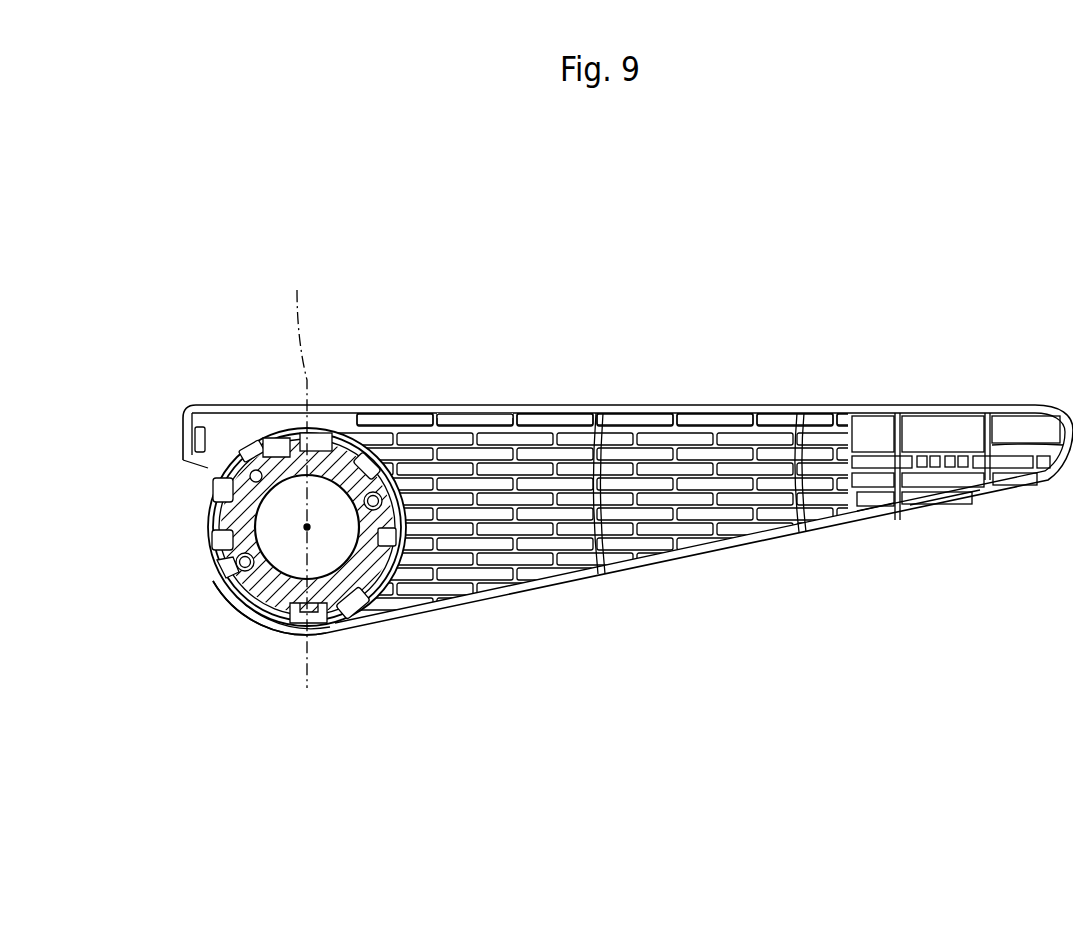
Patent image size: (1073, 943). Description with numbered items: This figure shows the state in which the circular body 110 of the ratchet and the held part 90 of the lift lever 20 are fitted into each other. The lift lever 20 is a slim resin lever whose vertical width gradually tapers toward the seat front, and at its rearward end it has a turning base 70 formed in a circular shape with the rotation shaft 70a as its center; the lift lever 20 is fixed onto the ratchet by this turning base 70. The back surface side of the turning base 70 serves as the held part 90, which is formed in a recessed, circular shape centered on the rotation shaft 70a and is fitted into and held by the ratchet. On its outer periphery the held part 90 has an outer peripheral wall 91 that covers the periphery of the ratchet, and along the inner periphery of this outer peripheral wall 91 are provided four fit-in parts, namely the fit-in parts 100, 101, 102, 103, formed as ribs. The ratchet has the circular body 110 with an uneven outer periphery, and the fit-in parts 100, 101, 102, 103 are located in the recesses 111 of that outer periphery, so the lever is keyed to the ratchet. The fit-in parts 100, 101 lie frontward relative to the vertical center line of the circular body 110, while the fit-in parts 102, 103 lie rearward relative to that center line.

The lift lever 20 is at (583, 405).
The turning base 70 is at (262, 633).
The rotation shaft 70a is at (310, 522).
The held part 90 is at (242, 438).
The outer peripheral wall 91 is at (415, 583).
The fit-in part 100 is at (322, 443).
The fit-in part 101 is at (323, 633).
The fit-in part 102 is at (220, 565).
The fit-in part 103 is at (217, 522).
The circular body 110 is at (398, 588).
The recesses 111 is at (222, 483).